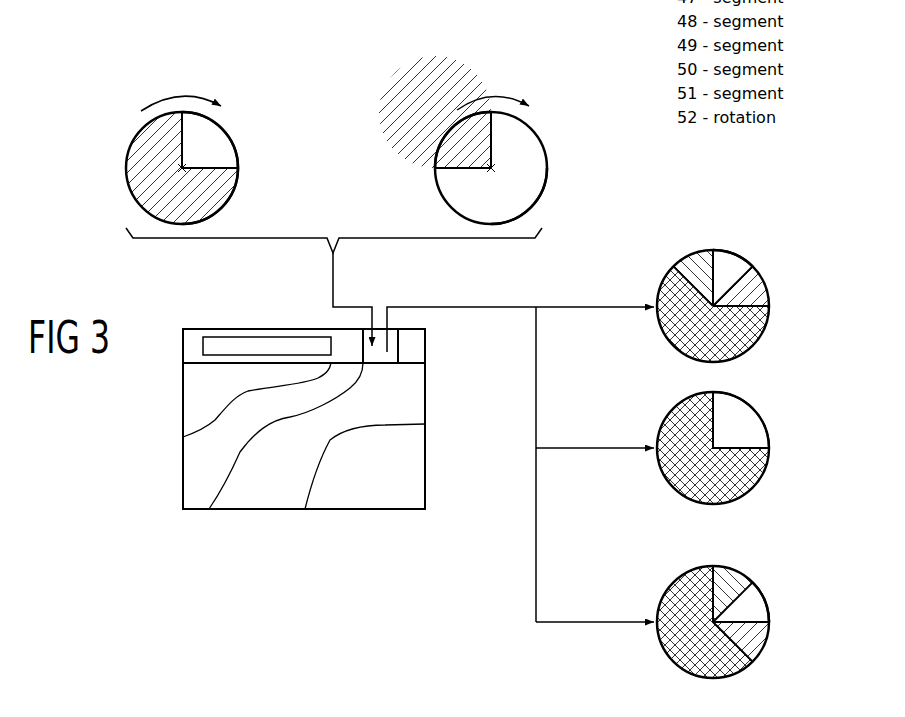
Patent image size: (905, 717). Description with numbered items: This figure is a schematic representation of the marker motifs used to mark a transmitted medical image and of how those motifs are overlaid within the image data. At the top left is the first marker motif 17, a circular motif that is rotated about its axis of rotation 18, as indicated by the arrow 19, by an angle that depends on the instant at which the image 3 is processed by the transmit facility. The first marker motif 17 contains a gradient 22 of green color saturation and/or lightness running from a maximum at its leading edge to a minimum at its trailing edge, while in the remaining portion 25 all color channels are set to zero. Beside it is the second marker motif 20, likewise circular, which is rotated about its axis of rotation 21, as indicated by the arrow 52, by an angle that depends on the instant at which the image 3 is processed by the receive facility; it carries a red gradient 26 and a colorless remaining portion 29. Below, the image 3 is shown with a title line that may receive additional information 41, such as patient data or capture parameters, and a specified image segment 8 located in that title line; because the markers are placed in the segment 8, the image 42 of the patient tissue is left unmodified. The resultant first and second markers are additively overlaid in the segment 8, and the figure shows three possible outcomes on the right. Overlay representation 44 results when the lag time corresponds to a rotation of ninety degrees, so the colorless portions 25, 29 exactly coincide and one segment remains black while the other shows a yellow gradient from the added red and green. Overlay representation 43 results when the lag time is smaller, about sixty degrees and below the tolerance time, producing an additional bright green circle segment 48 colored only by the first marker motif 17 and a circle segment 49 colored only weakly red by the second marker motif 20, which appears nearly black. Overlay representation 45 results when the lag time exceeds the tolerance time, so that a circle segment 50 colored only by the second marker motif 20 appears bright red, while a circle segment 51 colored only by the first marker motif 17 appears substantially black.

The image 3 is at (342, 420).
The image segment 8 is at (360, 346).
The first marker motif 17 is at (176, 124).
The axis of rotation 18 is at (182, 168).
The arrow 19 is at (179, 97).
The second marker motif 20 is at (500, 126).
The axis of rotation 21 is at (492, 168).
The gradient 22 is at (215, 192).
The remaining portion 25 is at (205, 146).
The gradient 26 is at (530, 192).
The remaining portion 29 is at (468, 145).
The additional information 41 is at (215, 337).
The image of the patient tissue 42 is at (266, 483).
The overlay representation 43 is at (733, 274).
The overlay representation 44 is at (733, 457).
The overlay representation 45 is at (732, 609).
The circle segment 48 is at (697, 262).
The circle segment 49 is at (757, 290).
The circle segment 50 is at (725, 590).
The circle segment 51 is at (757, 637).
The arrow 52 is at (489, 97).